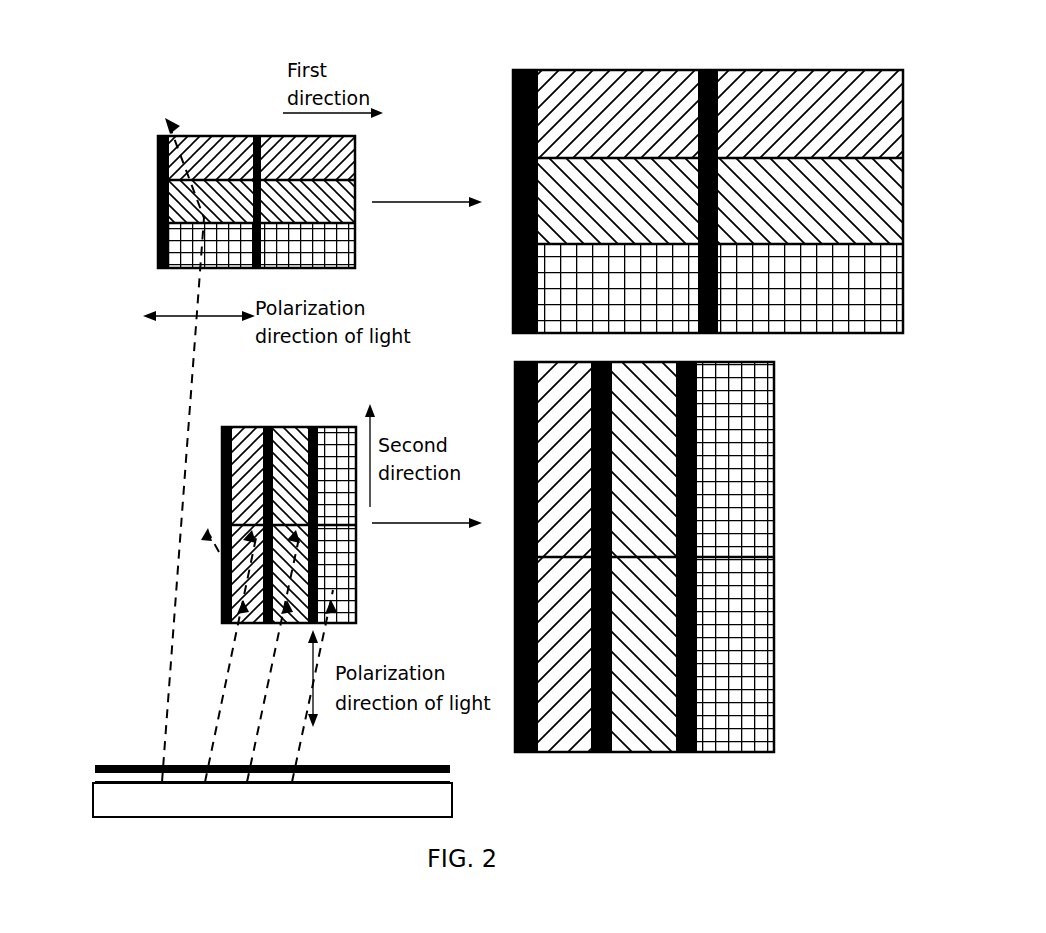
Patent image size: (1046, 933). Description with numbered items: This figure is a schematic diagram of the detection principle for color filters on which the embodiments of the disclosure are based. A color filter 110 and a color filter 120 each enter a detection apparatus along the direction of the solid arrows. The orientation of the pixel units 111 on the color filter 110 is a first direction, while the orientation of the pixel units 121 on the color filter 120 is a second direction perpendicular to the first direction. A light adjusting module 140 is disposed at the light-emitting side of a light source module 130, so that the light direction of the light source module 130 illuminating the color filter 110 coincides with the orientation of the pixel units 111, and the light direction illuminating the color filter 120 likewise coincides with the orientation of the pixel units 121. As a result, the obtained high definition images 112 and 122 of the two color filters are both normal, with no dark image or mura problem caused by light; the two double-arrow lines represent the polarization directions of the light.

The color filter 110 is at (200, 180).
The pixel units 111 is at (303, 145).
The high definition image 112 is at (710, 70).
The color filter 120 is at (217, 506).
The pixel units 121 is at (268, 427).
The high definition image 122 is at (778, 548).
The light source module 130 is at (121, 808).
The light adjusting module 140 is at (143, 766).